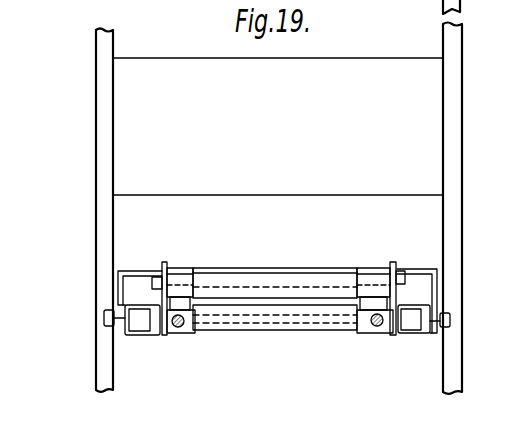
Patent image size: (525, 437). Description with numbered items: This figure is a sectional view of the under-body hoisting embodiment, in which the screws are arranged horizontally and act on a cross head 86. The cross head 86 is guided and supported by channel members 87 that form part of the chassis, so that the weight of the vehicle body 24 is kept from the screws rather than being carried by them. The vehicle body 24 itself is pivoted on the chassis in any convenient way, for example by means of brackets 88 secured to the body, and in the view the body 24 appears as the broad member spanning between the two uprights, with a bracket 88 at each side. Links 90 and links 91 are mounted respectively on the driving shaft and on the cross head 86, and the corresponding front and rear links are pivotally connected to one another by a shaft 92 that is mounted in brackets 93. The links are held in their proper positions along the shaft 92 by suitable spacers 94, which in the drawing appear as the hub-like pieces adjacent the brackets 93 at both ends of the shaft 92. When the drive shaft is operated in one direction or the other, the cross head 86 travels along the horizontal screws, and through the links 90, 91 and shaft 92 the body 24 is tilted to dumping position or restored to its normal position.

The vehicle body 24 is at (278, 126).
The cross head 86 is at (213, 337).
The channel members 87 is at (418, 334).
The brackets 88 is at (117, 277).
The links 90 is at (274, 323).
The links 91 is at (166, 333).
The shaft 92 is at (235, 279).
The brackets 93 is at (158, 268).
The spacers 94 is at (178, 271).